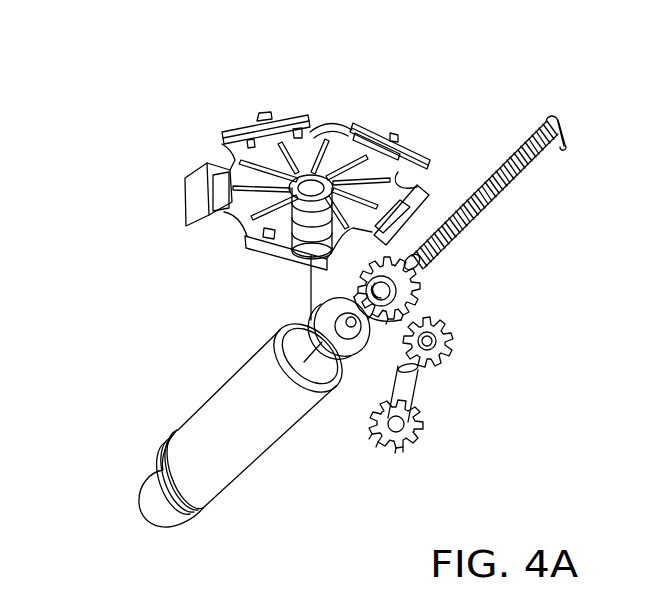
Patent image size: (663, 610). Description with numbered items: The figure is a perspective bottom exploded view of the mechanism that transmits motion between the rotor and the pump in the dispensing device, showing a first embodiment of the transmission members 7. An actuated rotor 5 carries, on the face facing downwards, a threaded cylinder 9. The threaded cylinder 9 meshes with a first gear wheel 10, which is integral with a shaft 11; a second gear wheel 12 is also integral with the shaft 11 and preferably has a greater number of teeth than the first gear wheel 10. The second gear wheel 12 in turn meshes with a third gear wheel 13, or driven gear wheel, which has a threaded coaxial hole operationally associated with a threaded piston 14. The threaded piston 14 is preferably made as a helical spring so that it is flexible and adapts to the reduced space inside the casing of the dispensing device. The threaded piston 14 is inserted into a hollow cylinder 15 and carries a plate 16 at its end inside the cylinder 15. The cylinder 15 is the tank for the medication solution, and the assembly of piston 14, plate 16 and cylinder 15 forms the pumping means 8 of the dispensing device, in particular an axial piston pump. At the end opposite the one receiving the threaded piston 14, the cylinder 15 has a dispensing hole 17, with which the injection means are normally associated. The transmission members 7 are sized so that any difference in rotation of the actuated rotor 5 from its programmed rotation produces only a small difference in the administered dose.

The actuated rotor 5 is at (358, 108).
The transmission members 7 is at (458, 374).
The pumping means 8 is at (186, 430).
The threaded cylinder 9 is at (290, 265).
The first gear wheel 10 is at (420, 415).
The shaft 11 is at (402, 383).
The second gear wheel 12 is at (447, 347).
The third gear wheel 13 is at (410, 292).
The threaded piston 14 is at (543, 130).
The hollow cylinder 15 is at (182, 430).
The plate 16 is at (330, 297).
The dispensing hole 17 is at (130, 518).